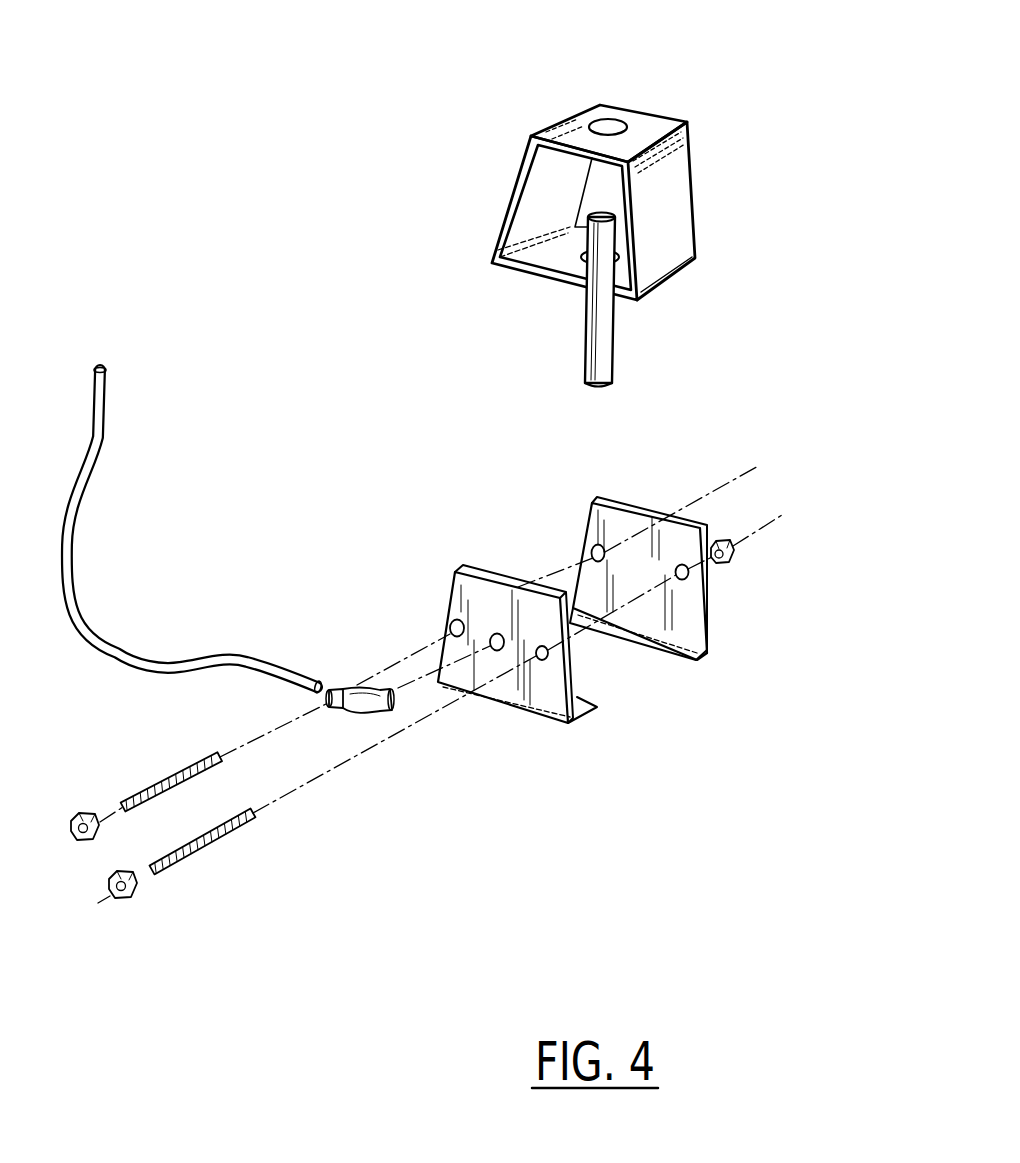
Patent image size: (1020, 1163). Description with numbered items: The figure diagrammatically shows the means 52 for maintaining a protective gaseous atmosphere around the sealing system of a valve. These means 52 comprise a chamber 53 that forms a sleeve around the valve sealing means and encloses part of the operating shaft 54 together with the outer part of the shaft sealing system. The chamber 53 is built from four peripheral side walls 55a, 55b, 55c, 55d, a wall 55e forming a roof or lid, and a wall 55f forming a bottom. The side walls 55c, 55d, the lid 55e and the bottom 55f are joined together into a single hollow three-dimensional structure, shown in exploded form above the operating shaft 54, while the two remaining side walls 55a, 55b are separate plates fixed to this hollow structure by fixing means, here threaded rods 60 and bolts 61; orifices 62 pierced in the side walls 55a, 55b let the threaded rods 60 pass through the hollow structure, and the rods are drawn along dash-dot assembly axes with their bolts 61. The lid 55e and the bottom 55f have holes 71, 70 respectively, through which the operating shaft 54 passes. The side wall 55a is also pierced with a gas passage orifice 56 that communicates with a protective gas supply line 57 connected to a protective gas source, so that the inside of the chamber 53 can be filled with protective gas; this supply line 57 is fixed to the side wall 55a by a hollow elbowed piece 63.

The means of maintaining a protective gaseous atmosphere 52 is at (377, 202).
The chamber 53 is at (708, 163).
The operating shaft 54 is at (587, 330).
The side wall 55a is at (538, 678).
The side wall 55b is at (679, 558).
The side wall 55c is at (678, 222).
The side wall 55d is at (508, 197).
The wall forming a roof or lid 55e is at (573, 126).
The wall forming a bottom 55f is at (612, 268).
The gas passage orifice 56 is at (497, 628).
The protective gas supply line 57 is at (93, 627).
The threaded rods 60 is at (205, 870).
The bolts 61 is at (125, 898).
The orifices 62 is at (590, 549).
The hollow elbowed piece 63 is at (370, 723).
The hole 70 is at (577, 260).
The hole 71 is at (625, 110).